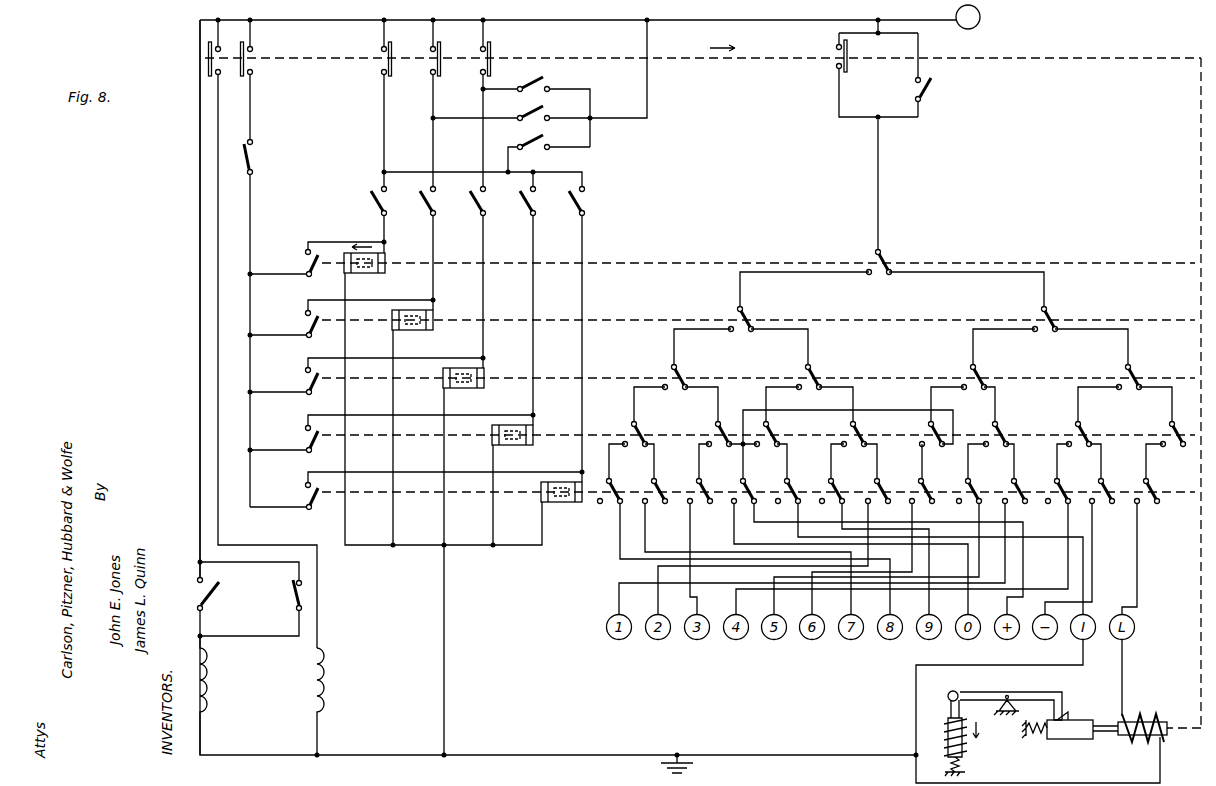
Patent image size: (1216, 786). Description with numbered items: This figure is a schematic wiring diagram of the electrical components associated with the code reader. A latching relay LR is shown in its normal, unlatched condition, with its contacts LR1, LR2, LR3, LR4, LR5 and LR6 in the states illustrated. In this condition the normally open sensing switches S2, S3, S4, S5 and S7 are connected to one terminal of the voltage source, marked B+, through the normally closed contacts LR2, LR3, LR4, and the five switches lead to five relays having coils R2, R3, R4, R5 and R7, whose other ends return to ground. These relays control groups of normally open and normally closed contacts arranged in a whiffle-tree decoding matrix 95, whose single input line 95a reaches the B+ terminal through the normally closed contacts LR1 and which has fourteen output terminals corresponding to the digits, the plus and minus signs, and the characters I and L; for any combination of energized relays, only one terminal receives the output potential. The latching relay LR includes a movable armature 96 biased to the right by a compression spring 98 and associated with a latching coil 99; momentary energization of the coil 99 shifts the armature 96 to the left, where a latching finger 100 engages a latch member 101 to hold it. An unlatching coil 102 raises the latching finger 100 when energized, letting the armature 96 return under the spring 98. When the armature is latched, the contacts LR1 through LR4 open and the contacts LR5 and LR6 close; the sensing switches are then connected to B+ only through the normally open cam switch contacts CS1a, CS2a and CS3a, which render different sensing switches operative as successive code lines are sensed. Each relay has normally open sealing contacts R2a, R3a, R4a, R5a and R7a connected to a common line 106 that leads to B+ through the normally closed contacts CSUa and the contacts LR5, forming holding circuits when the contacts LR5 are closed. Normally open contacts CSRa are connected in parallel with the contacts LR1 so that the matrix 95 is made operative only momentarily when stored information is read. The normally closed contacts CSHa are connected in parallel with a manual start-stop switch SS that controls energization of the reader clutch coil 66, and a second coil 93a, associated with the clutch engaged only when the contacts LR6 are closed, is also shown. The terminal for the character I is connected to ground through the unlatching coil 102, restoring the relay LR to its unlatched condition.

The common line 106 is at (200, 190).
The reader clutch coil 66 is at (212, 698).
The coil 93a is at (330, 692).
The decoding matrix 95 is at (944, 255).
The input line 95a is at (878, 166).
The latching finger 100 is at (1028, 694).
The unlatching coil 102 is at (945, 730).
The compression spring 98 is at (1034, 738).
The latch member 101 is at (1074, 740).
The latching coil 99 is at (1141, 711).
The movable armature 96 is at (1166, 736).
The latching relay LR is at (1009, 742).
The latching relay contacts LR1 is at (836, 62).
The latching relay contacts LR2 is at (398, 76).
The latching relay contacts LR3 is at (446, 76).
The latching relay contacts LR4 is at (492, 48).
The latching relay contacts LR5 is at (256, 66).
The latching relay contacts LR6 is at (207, 52).
The unsealing cam switch contacts CSUa is at (253, 158).
The cam switch contacts CS1a is at (549, 86).
The cam switch contacts CS2a is at (549, 113).
The cam switch contacts CS3a is at (549, 140).
The cam switch contacts CSRa is at (932, 92).
The home cam switch contacts CSHa is at (304, 598).
The manual start-stop switch SS is at (213, 590).
The sensing switch S2 is at (372, 210).
The sensing switch S3 is at (425, 212).
The sensing switch S4 is at (474, 214).
The sensing switch S5 is at (524, 214).
The sensing switch S7 is at (573, 214).
The sealing contacts R2a is at (305, 262).
The sealing contacts R3a is at (305, 322).
The sealing contacts R4a is at (305, 380).
The sealing contacts R5a is at (305, 438).
The sealing contacts R7a is at (305, 494).
The relay coil R2 is at (368, 273).
The relay coil R3 is at (416, 330).
The relay coil R4 is at (468, 388).
The relay coil R5 is at (518, 445).
The relay coil R7 is at (560, 502).